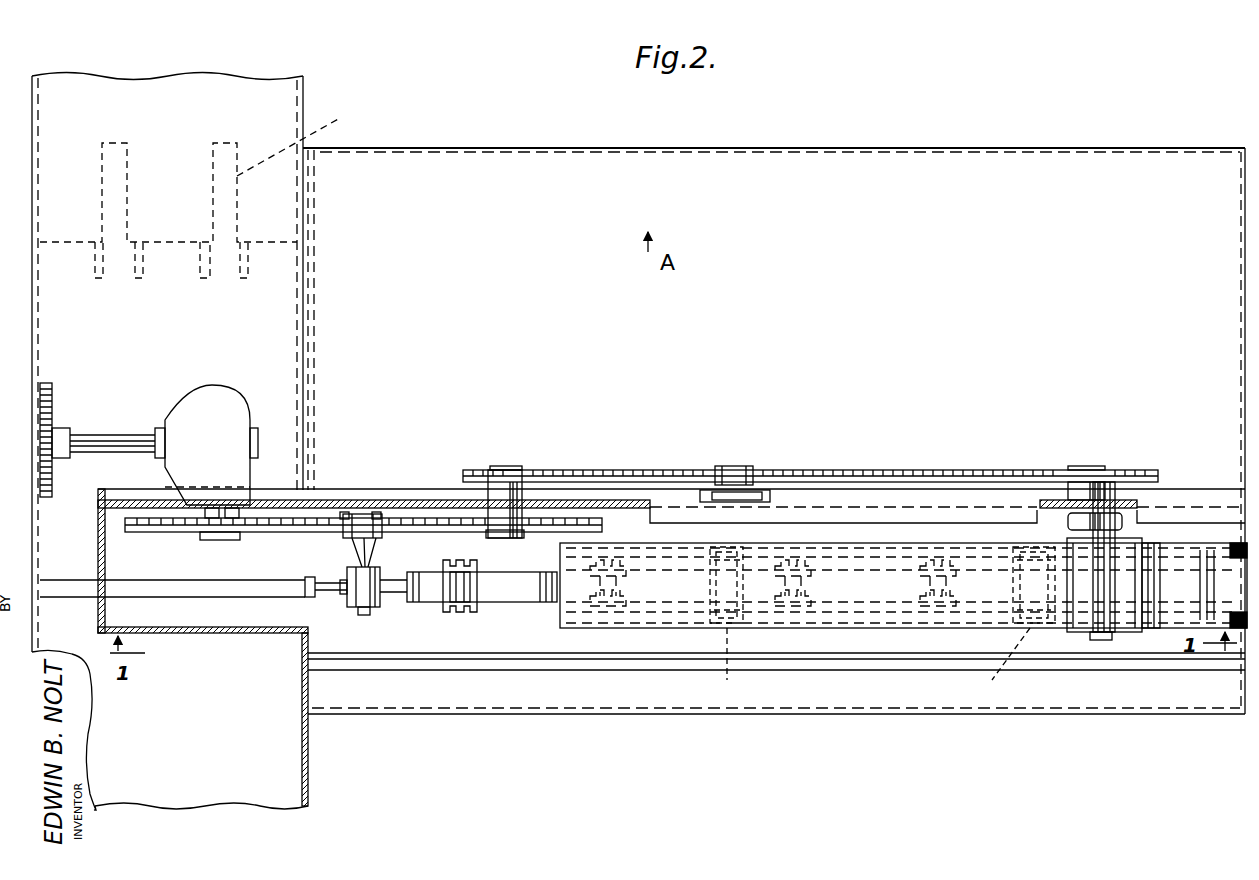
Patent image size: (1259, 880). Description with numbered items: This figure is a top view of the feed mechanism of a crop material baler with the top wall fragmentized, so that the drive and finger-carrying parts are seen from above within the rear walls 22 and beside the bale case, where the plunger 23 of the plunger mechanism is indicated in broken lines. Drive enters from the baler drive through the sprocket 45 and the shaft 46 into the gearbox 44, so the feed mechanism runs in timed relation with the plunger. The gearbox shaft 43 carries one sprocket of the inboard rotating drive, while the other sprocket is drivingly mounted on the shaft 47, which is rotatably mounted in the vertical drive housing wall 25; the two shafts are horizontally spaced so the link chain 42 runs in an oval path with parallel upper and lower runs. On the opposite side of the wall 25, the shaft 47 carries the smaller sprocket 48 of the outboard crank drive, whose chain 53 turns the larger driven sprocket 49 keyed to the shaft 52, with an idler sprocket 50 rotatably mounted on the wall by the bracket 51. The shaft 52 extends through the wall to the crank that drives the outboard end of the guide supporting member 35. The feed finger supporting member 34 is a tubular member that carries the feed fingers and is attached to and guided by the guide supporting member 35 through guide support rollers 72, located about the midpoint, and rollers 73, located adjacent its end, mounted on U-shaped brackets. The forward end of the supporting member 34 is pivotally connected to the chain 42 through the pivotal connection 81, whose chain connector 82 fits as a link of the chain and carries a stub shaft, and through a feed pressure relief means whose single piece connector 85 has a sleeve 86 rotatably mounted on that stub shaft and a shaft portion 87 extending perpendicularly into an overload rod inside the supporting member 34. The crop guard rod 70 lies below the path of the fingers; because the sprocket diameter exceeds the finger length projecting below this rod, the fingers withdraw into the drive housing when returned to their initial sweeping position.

The rear walls 22 is at (1096, 718).
The plunger 23 is at (206, 189).
The drive housing 25 is at (430, 500).
The feed finger supporting member 34 is at (515, 602).
The guide supporting member 35 is at (620, 632).
The link chain 42 is at (310, 520).
The shaft 43 is at (222, 540).
The gearbox 44 is at (215, 390).
The sprocket 45 is at (86, 406).
The shaft 46 is at (112, 435).
The shaft 47 is at (512, 466).
The sprocket 48 is at (470, 472).
The driven sprocket 49 is at (1125, 470).
The idler sprocket 50 is at (740, 466).
The bracket 51 is at (785, 490).
The shaft 52 is at (1080, 466).
The chain 53 is at (880, 470).
The crop guard rod 70 is at (326, 600).
The guide support rollers 72 is at (726, 624).
The guide support rollers 73 is at (1016, 625).
The pivotal connection 81 is at (340, 556).
The chain connector 82 is at (378, 512).
The single piece connector 85 is at (395, 600).
The sleeve 86 is at (372, 612).
The shaft portion 87 is at (395, 575).